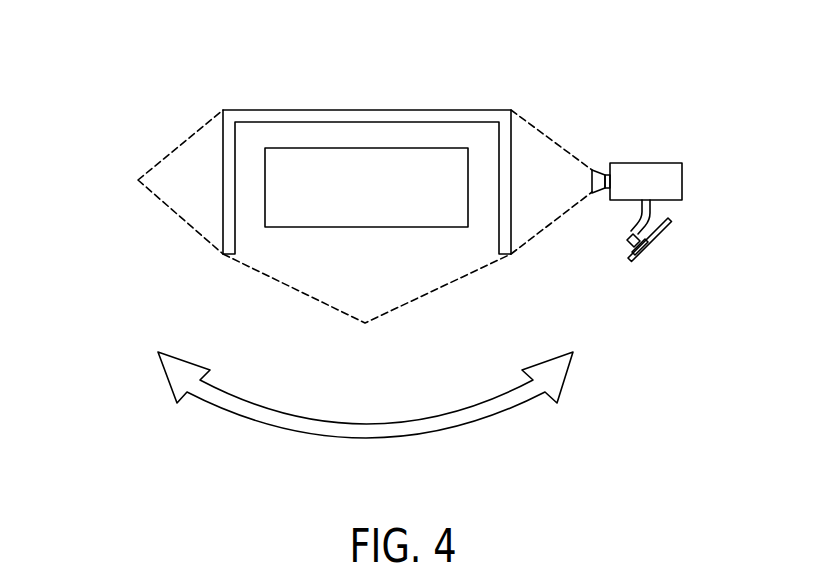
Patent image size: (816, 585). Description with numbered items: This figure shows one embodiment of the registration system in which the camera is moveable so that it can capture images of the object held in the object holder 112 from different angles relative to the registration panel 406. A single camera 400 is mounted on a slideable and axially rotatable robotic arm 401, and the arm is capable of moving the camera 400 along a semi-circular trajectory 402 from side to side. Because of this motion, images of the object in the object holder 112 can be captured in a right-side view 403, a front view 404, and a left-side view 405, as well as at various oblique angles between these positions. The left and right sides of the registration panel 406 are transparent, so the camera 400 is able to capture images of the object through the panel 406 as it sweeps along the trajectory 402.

The object holder 112 is at (349, 197).
The camera 400 is at (643, 163).
The robotic arm 401 is at (660, 217).
The semi-circular trajectory 402 is at (367, 442).
The right-side view 403 is at (563, 143).
The front view 404 is at (432, 290).
The left-side view 405 is at (138, 180).
The registration panel 406 is at (433, 110).